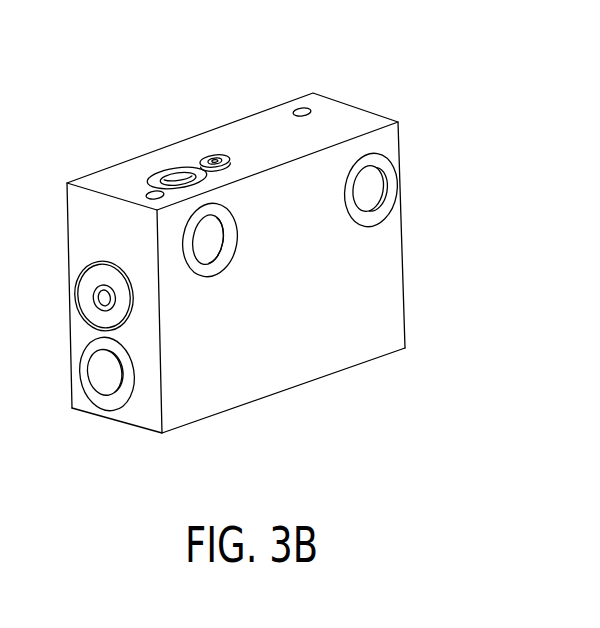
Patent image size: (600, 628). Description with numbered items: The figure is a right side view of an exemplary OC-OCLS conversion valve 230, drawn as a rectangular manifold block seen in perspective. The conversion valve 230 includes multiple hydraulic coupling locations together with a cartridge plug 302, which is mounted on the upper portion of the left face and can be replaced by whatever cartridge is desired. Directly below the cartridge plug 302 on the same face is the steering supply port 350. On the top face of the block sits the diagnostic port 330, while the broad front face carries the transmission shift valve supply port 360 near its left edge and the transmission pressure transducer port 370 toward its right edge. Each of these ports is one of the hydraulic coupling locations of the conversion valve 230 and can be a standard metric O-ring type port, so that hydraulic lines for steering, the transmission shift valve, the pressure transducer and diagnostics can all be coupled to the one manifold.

The OC-OCLS conversion valve 230 is at (238, 82).
The diagnostic port 330 is at (173, 178).
The cartridge plug 302 is at (100, 297).
The steering supply port 350 is at (107, 372).
The transmission shift valve supply port 360 is at (208, 248).
The transmission pressure transducer port 370 is at (368, 188).